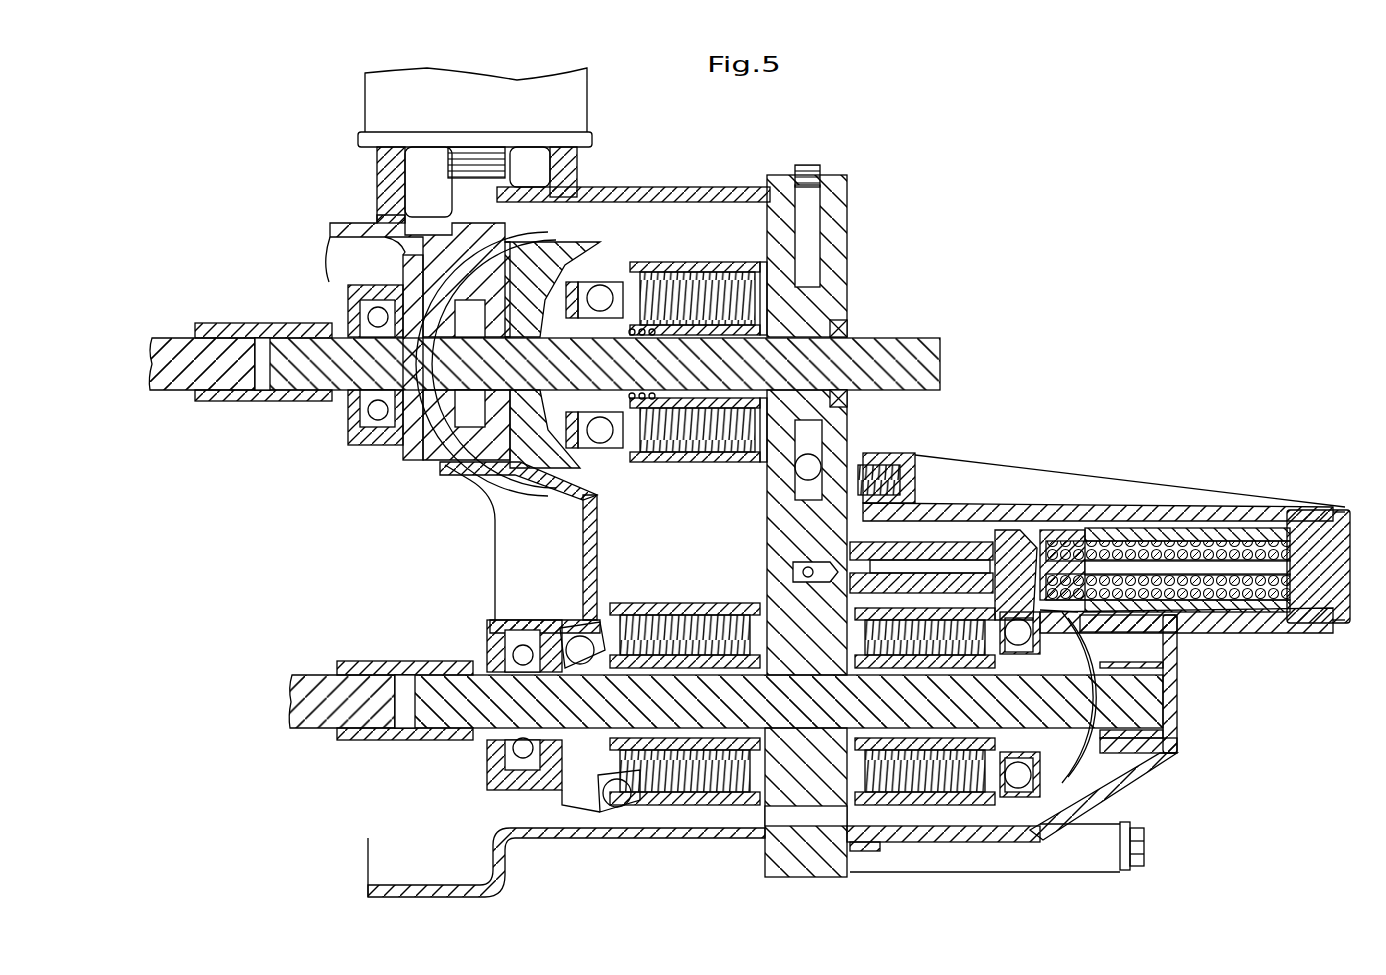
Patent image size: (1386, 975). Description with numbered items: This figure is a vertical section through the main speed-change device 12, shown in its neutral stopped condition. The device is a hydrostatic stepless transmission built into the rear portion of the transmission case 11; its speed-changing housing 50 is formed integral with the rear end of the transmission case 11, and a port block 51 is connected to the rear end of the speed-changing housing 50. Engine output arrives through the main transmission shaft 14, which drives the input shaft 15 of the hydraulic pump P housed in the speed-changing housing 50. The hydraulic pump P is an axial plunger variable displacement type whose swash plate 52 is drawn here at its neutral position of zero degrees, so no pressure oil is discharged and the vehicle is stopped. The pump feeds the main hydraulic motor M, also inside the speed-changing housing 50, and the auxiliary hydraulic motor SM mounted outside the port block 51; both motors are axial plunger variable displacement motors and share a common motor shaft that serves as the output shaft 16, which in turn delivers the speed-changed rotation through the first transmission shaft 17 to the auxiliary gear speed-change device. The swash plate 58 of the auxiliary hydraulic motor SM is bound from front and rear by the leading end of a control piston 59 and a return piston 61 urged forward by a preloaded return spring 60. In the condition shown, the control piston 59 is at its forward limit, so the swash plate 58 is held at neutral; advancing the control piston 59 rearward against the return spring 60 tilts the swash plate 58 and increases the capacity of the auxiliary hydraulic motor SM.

The transmission case 11 is at (348, 222).
The main speed-change device 12 is at (1048, 367).
The main transmission shaft 14 is at (155, 340).
The input shaft 15 is at (350, 378).
The output shaft 16 is at (490, 740).
The first transmission shaft 17 is at (317, 684).
The speed-changing housing 50 is at (585, 557).
The port block 51 is at (838, 250).
The swash plate 52 is at (605, 265).
The swash plate 58 is at (1005, 535).
The control piston 59 is at (948, 540).
The return spring 60 is at (1230, 542).
The return piston 61 is at (1050, 537).
The hydraulic pump P is at (720, 470).
The main hydraulic motor M is at (718, 808).
The auxiliary hydraulic motor SM is at (920, 812).